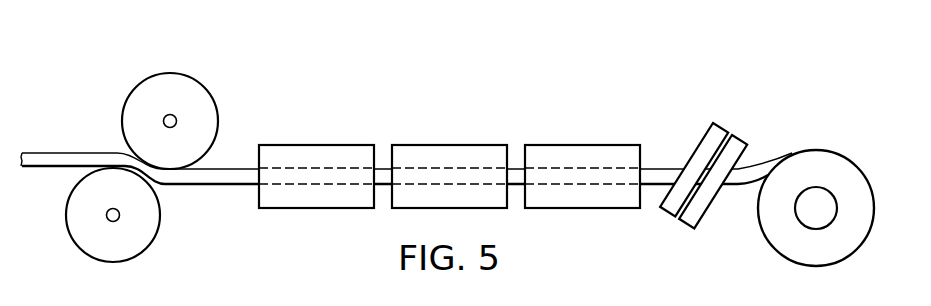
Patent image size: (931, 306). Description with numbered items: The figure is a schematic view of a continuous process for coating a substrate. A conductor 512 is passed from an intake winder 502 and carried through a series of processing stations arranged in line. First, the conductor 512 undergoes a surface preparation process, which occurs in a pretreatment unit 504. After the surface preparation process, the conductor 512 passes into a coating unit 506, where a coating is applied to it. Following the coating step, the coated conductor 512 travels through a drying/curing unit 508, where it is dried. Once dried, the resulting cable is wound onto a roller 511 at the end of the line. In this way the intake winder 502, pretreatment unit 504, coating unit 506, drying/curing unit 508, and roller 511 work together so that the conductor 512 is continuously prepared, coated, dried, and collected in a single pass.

The intake winder 502 is at (172, 73).
The pretreatment unit 504 is at (317, 145).
The coating unit 506 is at (450, 145).
The drying/curing unit 508 is at (582, 145).
The roller 511 is at (815, 151).
The conductor 512 is at (215, 186).